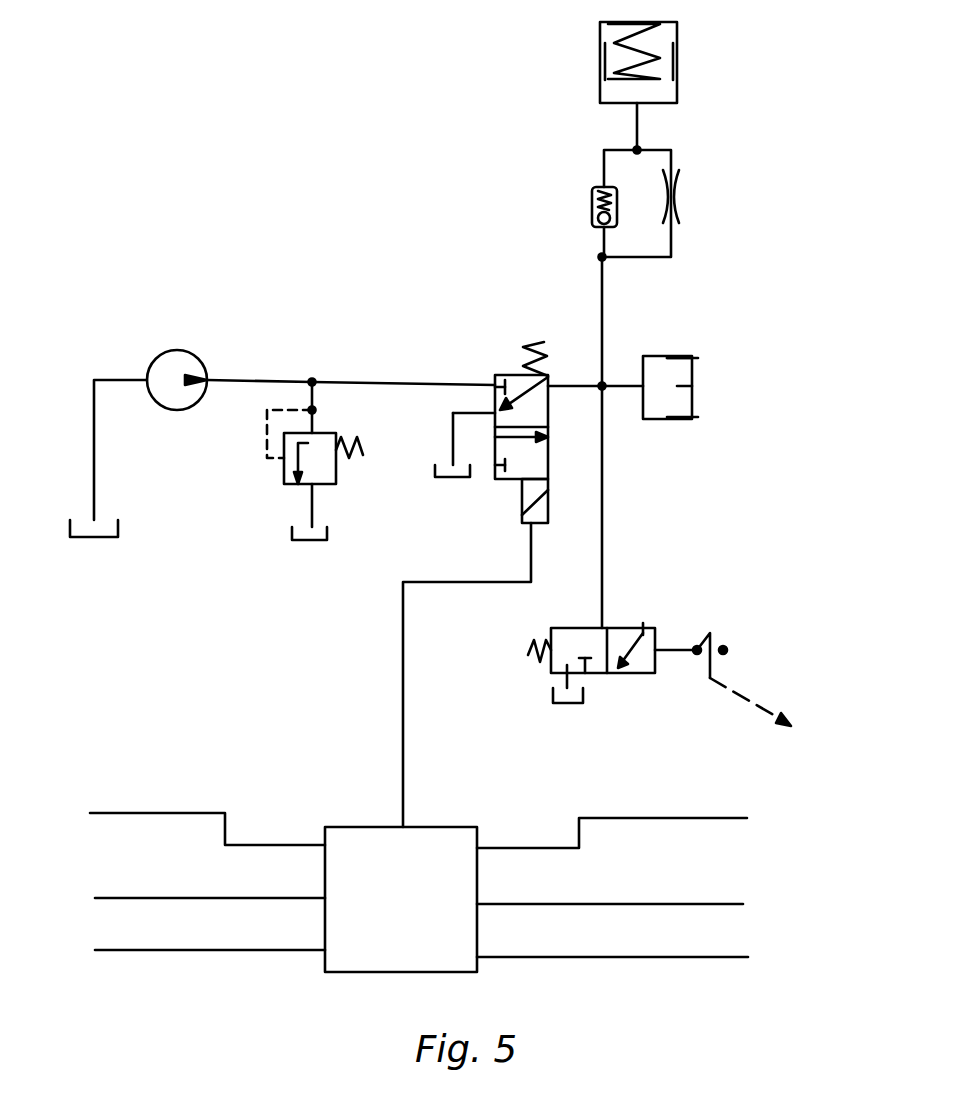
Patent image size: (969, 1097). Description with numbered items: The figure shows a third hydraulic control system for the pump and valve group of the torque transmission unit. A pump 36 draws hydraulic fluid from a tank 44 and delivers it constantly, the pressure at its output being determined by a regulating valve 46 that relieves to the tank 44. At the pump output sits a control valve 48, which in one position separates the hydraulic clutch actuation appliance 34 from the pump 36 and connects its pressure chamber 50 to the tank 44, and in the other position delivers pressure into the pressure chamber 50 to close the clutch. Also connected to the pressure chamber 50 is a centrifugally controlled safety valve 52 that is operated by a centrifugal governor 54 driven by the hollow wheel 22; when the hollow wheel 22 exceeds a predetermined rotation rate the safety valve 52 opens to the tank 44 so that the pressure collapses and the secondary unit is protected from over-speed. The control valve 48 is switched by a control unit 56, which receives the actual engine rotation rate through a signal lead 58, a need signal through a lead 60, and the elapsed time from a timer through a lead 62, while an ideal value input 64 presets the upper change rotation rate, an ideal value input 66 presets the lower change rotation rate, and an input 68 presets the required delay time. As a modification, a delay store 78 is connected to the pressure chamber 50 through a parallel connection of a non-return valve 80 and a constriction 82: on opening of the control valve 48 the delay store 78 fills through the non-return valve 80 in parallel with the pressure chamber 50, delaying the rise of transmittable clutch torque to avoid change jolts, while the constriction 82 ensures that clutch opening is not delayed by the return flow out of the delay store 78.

The hollow wheel 22 is at (757, 702).
The hydraulic clutch actuation appliance 34 is at (670, 358).
The pump 36 is at (195, 352).
The tank 44 is at (100, 537).
The regulating valve 46 is at (336, 472).
The control valve 48 is at (548, 455).
The pressure chamber 50 is at (692, 386).
The centrifugally controlled safety valve 52 is at (620, 625).
The centrifugal governor 54 is at (716, 645).
The control unit 56 is at (440, 827).
The signal lead 58 is at (203, 812).
The lead 60 is at (255, 898).
The lead 62 is at (250, 950).
The ideal value input 64 is at (742, 820).
The ideal value input 66 is at (740, 906).
The input 68 is at (735, 957).
The delay store 78 is at (673, 80).
The non-return valve 80 is at (590, 210).
The constriction 82 is at (677, 207).